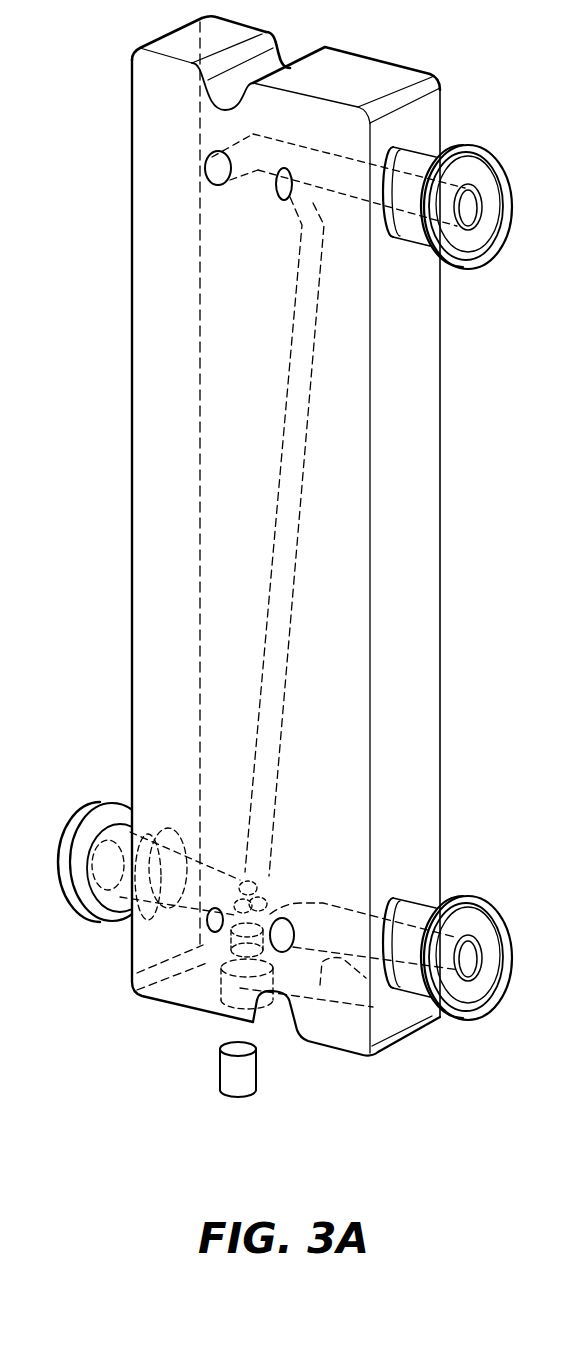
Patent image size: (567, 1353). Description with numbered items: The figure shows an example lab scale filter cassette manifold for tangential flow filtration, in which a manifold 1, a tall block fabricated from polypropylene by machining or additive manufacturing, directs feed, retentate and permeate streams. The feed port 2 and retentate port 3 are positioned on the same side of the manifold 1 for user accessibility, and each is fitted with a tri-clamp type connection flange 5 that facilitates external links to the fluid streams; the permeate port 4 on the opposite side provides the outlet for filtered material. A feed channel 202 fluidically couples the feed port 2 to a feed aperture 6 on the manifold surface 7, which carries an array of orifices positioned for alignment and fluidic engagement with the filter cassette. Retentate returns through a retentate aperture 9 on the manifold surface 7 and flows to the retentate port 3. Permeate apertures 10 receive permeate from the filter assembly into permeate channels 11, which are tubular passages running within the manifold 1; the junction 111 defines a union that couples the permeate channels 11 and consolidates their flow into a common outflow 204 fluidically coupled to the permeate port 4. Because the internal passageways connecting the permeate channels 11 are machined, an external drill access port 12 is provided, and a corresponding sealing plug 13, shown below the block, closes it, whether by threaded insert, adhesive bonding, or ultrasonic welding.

The manifold 1 is at (150, 250).
The feed port 2 is at (455, 948).
The retentate port 3 is at (427, 168).
The permeate port 4 is at (108, 897).
The connection flange 5 is at (480, 1008).
The feed aperture 6 is at (286, 947).
The manifold surface 7 is at (167, 93).
The retentate aperture 9 is at (205, 172).
The permeate aperture 10 is at (208, 926).
The permeate channel 11 is at (283, 535).
The drill access port 12 is at (230, 1000).
The sealing plug 13 is at (227, 1072).
The junction 111 is at (273, 890).
The feed channel 202 is at (349, 917).
The common outflow 204 is at (213, 880).